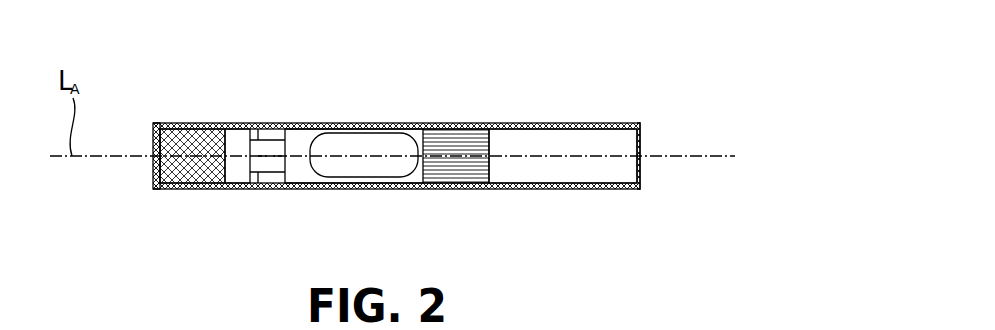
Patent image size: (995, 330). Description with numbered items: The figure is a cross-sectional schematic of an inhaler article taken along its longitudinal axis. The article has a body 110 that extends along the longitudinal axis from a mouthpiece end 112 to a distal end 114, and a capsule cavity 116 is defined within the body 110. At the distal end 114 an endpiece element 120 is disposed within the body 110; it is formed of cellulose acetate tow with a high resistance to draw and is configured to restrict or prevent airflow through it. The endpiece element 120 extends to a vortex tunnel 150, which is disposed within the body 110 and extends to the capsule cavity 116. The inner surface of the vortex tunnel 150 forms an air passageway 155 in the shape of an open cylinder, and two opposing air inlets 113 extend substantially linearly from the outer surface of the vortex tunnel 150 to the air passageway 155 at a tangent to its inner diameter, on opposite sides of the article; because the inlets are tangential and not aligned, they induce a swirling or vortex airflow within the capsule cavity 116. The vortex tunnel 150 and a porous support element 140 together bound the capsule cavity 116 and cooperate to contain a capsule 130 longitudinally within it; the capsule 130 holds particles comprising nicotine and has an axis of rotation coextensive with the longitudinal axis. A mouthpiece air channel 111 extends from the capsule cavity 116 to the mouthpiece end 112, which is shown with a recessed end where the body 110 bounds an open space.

The body 110 is at (417, 189).
The mouthpiece air channel 111 is at (568, 138).
The mouthpiece end 112 is at (638, 189).
The air inlets 113 is at (255, 131).
The distal end 114 is at (158, 119).
The capsule cavity 116 is at (307, 136).
The endpiece element 120 is at (192, 142).
The capsule 130 is at (375, 145).
The porous support element 140 is at (455, 138).
The vortex tunnel 150 is at (235, 136).
The air passageway 155 is at (280, 158).